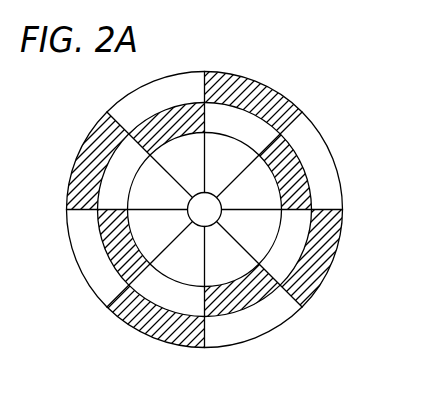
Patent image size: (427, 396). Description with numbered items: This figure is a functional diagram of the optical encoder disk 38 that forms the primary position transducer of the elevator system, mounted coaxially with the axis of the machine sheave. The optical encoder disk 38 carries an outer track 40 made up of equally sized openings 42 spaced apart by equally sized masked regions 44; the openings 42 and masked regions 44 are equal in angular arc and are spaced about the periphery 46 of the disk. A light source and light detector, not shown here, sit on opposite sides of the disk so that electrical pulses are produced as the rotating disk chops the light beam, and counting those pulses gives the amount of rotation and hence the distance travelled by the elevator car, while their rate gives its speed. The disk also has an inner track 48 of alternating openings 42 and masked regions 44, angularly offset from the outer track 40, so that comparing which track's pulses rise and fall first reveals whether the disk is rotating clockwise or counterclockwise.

The optical encoder disk 38 is at (268, 82).
The outer track 40 is at (308, 152).
The openings 42 is at (237, 118).
The masked regions 44 is at (215, 82).
The periphery 46 is at (193, 349).
The inner track 48 is at (282, 262).